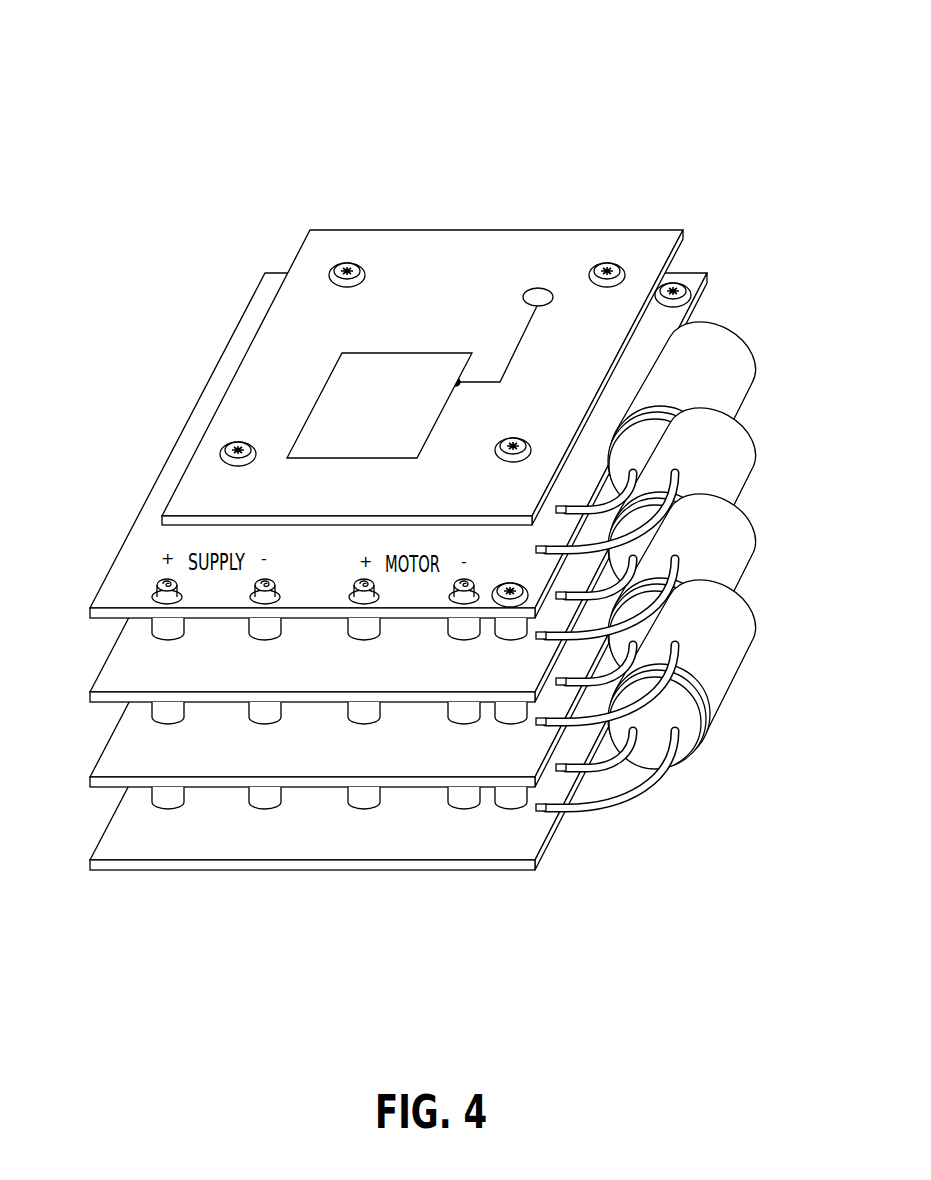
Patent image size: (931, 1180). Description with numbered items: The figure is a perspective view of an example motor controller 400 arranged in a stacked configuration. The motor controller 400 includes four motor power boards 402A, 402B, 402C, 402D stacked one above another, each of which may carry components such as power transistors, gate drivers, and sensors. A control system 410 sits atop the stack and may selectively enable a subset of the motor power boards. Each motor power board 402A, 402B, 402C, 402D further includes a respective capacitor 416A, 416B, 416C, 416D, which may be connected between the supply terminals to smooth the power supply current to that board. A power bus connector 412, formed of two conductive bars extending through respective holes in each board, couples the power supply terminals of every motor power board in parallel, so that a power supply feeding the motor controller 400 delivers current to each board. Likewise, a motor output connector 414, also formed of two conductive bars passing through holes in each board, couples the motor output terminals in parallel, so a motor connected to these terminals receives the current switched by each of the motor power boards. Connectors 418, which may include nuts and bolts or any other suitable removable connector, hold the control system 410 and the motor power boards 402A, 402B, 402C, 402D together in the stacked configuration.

The motor controller 400 is at (132, 77).
The motor power board 402A is at (94, 600).
The motor power board 402B is at (94, 685).
The motor power board 402C is at (94, 769).
The motor power board 402D is at (94, 852).
The control system 410 is at (318, 402).
The power bus connector 412 is at (254, 588).
The motor output connector 414 is at (452, 588).
The capacitor 416A is at (758, 392).
The capacitor 416B is at (758, 472).
The capacitor 416C is at (758, 551).
The capacitor 416D is at (758, 635).
The connectors 418 is at (364, 279).